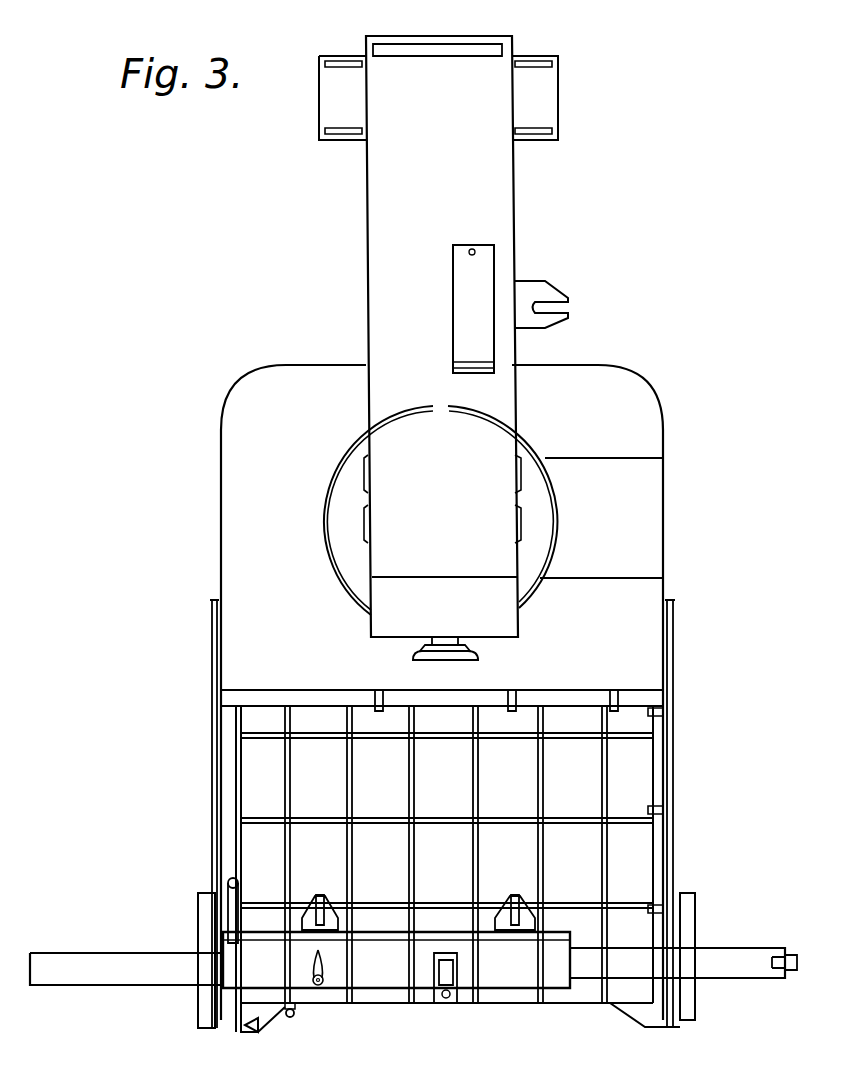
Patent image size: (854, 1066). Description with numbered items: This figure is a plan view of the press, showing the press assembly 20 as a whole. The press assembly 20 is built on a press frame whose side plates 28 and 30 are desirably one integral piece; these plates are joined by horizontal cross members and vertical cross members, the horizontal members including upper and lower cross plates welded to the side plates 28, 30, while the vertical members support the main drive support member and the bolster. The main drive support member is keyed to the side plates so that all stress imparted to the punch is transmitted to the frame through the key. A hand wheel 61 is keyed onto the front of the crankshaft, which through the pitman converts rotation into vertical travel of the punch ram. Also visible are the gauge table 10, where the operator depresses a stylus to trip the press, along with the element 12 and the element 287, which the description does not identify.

The gauge table 10 is at (210, 810).
The ring 12 is at (527, 624).
The press assembly 20 is at (516, 397).
The side plate 28 is at (367, 244).
The side plate 30 is at (514, 226).
The hand wheel 61 is at (470, 660).
The bolt 287 is at (292, 1018).